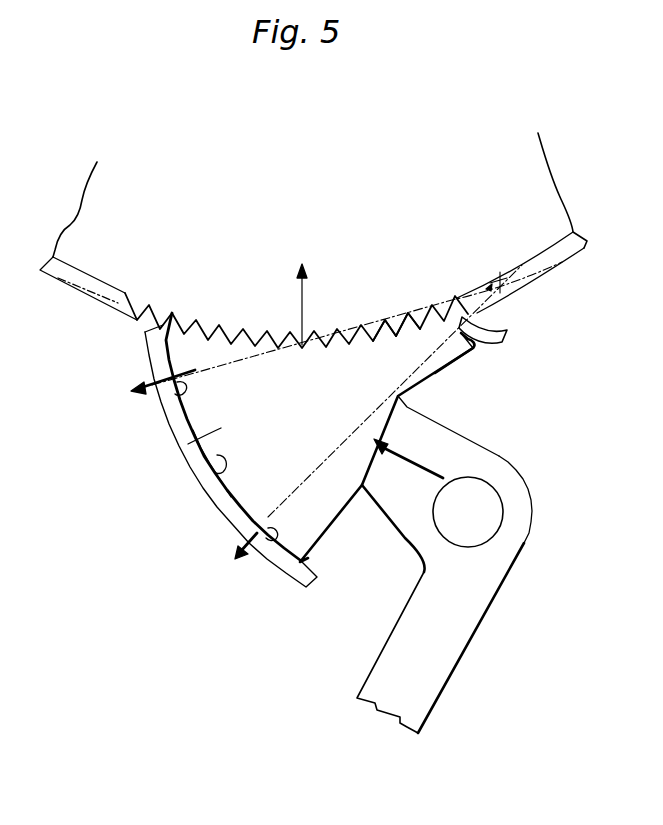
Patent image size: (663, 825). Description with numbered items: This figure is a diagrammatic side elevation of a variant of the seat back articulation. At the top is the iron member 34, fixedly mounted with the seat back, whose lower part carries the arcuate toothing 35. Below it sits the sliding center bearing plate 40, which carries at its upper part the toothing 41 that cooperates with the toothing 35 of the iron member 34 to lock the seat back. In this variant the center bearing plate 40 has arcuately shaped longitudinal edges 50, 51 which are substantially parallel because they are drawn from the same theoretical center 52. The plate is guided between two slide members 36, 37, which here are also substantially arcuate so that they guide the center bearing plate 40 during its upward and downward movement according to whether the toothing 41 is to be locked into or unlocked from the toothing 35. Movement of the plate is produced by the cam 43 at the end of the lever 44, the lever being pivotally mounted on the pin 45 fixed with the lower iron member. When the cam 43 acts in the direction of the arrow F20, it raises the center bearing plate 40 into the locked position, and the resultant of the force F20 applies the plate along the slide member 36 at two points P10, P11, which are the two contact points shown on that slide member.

The iron member 34 is at (372, 214).
The toothing 35 is at (402, 318).
The slide member 36 is at (203, 474).
The slide member 37 is at (496, 322).
The center bearing plate 40 is at (188, 444).
The toothing 41 is at (377, 325).
The cam 43 is at (424, 439).
The lever 44 is at (452, 647).
The pin 45 is at (482, 490).
The longitudinal edge 50 is at (212, 483).
The longitudinal edge 51 is at (463, 349).
The theoretical center 52 is at (522, 223).
The application point P10 is at (177, 400).
The application point P11 is at (267, 550).
The force F20 is at (408, 463).